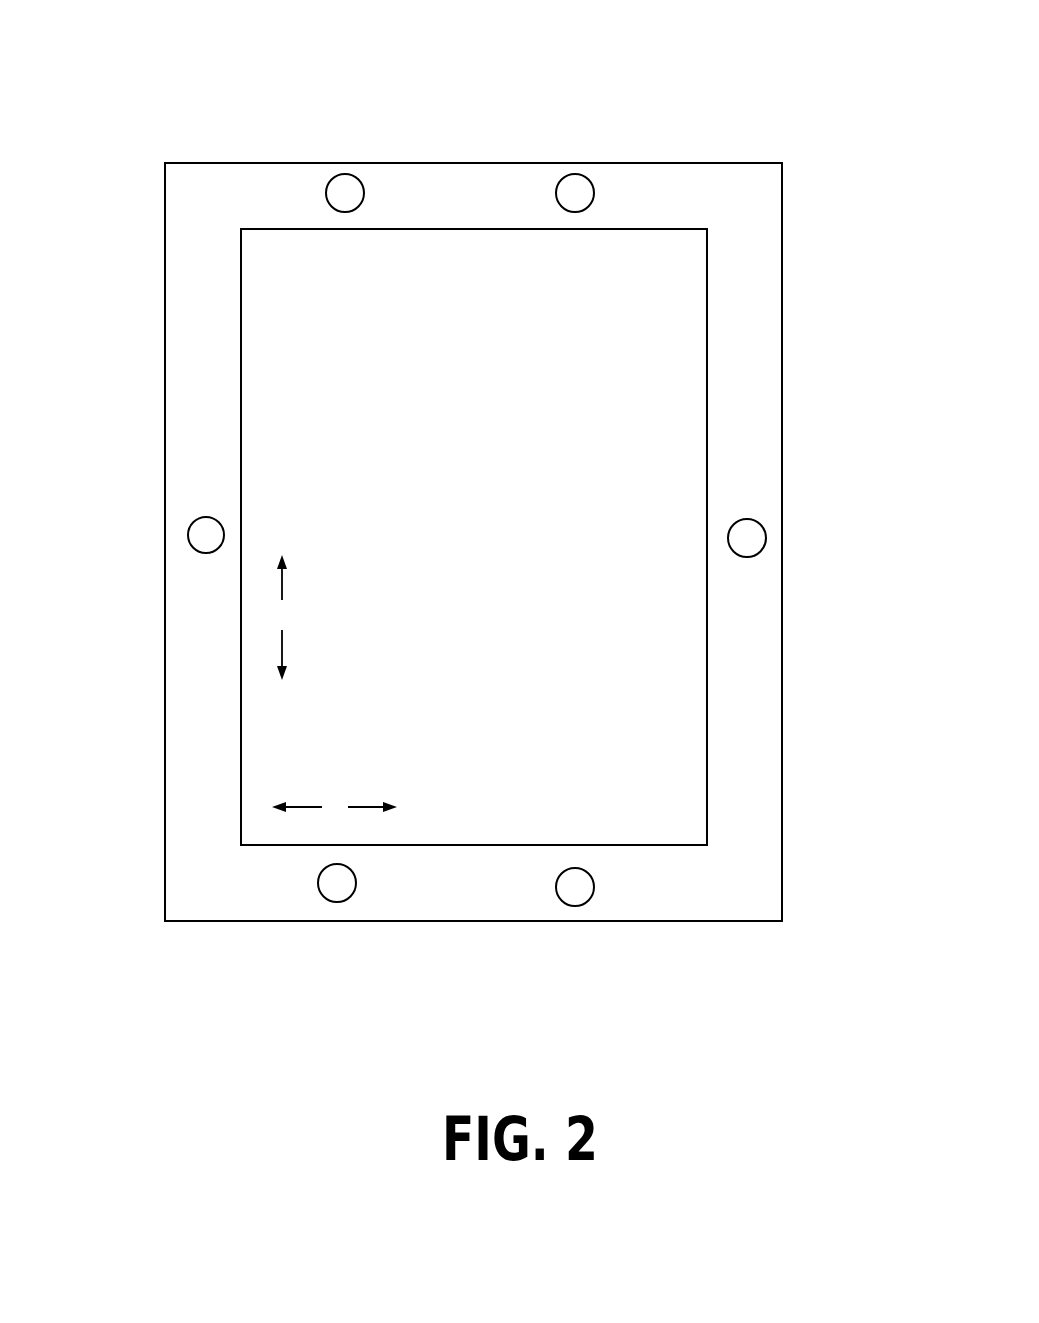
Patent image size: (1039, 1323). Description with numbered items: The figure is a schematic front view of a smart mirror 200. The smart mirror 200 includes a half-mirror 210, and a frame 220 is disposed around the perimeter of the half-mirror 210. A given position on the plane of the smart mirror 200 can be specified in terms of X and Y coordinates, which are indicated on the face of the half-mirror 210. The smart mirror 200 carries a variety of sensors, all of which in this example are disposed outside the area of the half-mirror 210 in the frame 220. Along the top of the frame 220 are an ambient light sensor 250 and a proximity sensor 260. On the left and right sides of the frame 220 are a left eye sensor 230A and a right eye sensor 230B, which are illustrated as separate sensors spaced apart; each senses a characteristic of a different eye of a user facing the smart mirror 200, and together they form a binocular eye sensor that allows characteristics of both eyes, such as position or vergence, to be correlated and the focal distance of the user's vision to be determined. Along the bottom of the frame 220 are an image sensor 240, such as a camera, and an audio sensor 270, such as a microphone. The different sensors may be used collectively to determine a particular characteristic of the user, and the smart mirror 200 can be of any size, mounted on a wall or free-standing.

The smart mirror 200 is at (181, 58).
The half-mirror 210 is at (668, 845).
The frame 220 is at (624, 921).
The left eye sensor 230A is at (192, 545).
The right eye sensor 230B is at (763, 547).
The image sensor 240 is at (342, 902).
The ambient light sensor 250 is at (338, 175).
The proximity sensor 260 is at (582, 175).
The audio sensor 270 is at (577, 906).